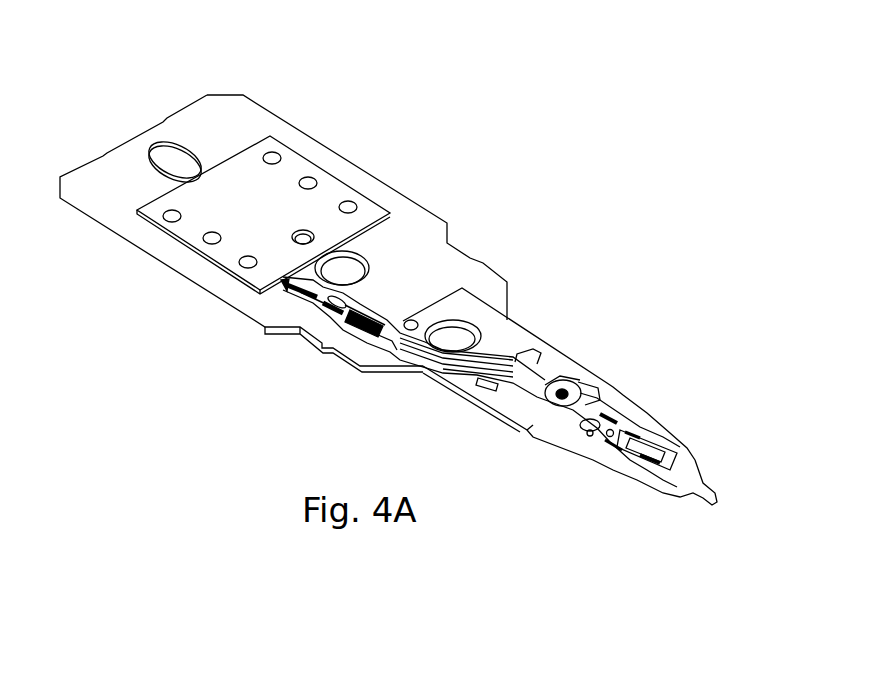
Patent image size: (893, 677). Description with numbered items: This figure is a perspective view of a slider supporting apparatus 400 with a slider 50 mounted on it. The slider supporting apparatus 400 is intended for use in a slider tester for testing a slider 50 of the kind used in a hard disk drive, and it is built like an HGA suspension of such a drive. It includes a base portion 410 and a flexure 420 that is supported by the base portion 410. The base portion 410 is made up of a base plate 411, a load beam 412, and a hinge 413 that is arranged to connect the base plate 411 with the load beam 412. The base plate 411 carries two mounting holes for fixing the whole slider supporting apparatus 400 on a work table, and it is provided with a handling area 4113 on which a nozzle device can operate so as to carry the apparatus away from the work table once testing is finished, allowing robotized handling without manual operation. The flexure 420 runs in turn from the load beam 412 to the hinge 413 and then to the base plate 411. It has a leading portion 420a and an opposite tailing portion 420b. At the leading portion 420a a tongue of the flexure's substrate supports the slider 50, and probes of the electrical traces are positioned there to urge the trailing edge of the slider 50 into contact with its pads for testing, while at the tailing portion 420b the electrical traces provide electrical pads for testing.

The slider supporting apparatus 400 is at (93, 44).
The base portion 410 is at (441, 185).
The base plate 411 is at (243, 125).
The handling area 4113 is at (265, 205).
The hinge 413 is at (495, 332).
The load beam 412 is at (575, 447).
The flexure 420 is at (632, 415).
The leading portion 420a is at (640, 470).
The tailing portion 420b is at (287, 285).
The slider 50 is at (677, 440).